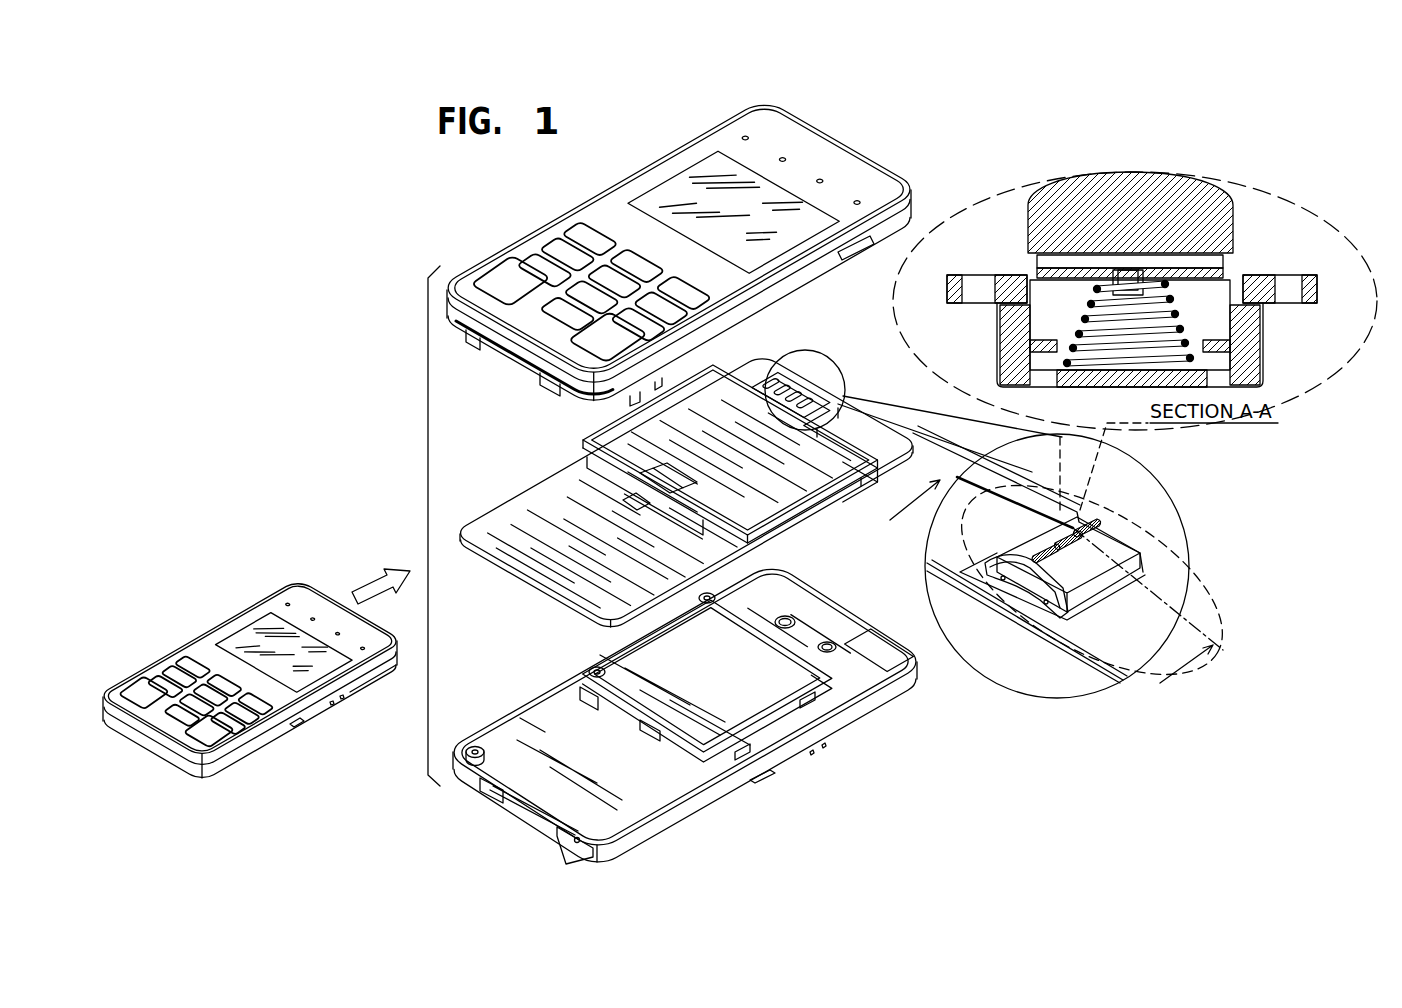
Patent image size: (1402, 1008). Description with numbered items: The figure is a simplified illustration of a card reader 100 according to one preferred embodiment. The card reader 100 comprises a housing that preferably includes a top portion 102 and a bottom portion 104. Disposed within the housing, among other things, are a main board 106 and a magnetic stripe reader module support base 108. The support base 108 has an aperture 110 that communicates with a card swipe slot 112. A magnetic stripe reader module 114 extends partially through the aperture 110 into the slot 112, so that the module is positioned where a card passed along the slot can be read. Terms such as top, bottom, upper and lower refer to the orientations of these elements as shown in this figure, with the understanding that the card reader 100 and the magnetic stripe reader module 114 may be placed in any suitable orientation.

The card reader 100 is at (260, 557).
The top portion 102 is at (730, 130).
The bottom portion 104 is at (550, 747).
The main board 106 is at (530, 510).
The magnetic stripe reader module support base 108 is at (757, 367).
The aperture 110 is at (1153, 563).
The card swipe slot 112 is at (397, 663).
The magnetic stripe reader module 114 is at (1080, 520).